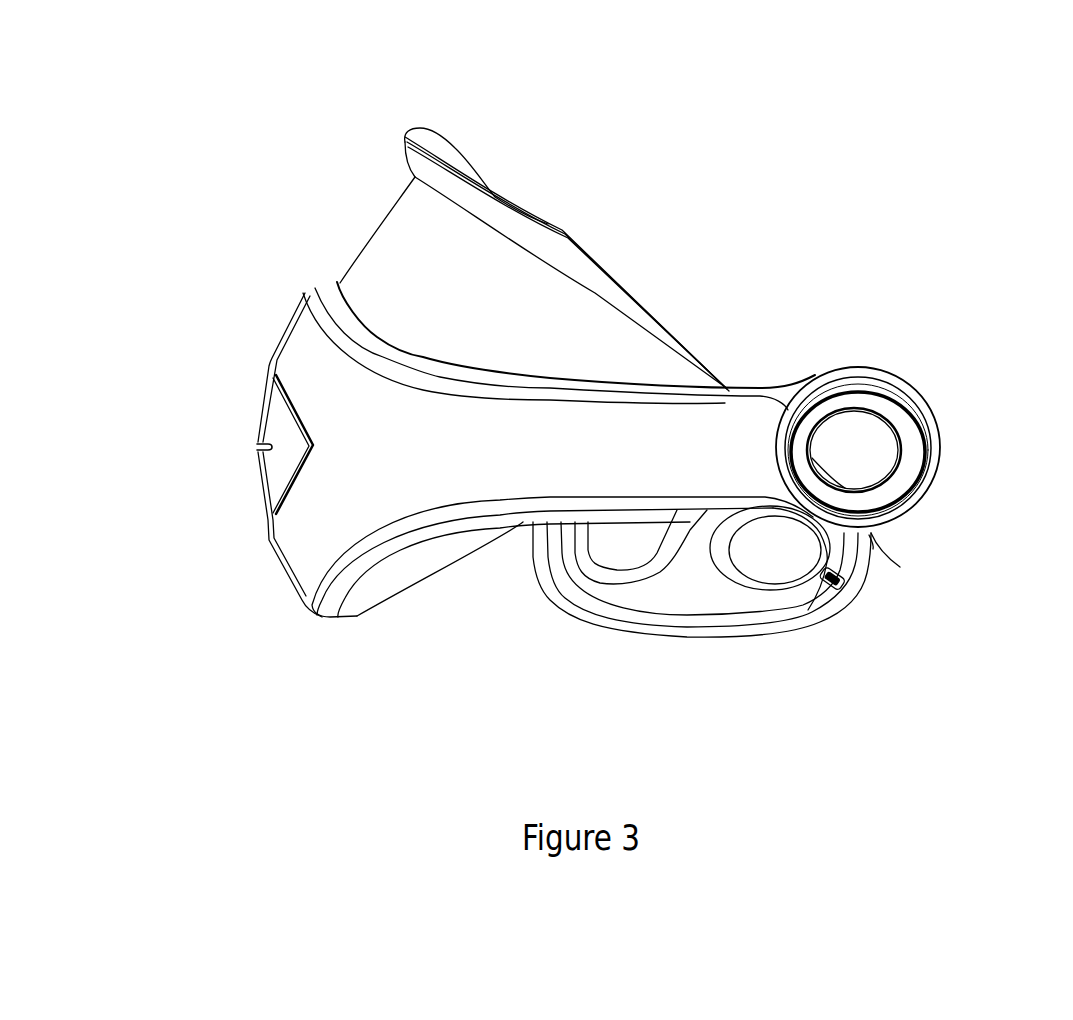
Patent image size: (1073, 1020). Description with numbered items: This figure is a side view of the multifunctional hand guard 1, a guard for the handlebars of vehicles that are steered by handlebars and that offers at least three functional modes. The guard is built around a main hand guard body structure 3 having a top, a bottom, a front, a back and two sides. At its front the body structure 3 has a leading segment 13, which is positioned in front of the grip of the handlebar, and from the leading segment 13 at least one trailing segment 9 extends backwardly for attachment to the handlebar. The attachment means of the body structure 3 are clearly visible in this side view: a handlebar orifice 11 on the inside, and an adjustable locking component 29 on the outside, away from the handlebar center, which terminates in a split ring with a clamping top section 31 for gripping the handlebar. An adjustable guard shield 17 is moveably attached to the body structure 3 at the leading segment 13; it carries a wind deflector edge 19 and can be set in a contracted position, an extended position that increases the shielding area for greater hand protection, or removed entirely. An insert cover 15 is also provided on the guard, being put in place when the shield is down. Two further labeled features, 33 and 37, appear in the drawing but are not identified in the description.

The multifunctional hand guard 1 is at (623, 200).
The main hand guard body structure 3 is at (303, 542).
The trailing segment 9 is at (707, 422).
The handlebar orifice 11 is at (898, 440).
The leading segment 13 is at (276, 523).
The insert cover 15 is at (283, 470).
The adjustable guard shield 17 is at (405, 235).
The wind deflector edge 19 is at (497, 188).
The adjustable locking component 29 is at (658, 603).
The clamping top section 31 is at (862, 556).
The slot 33 is at (850, 590).
The tip 37 is at (874, 542).